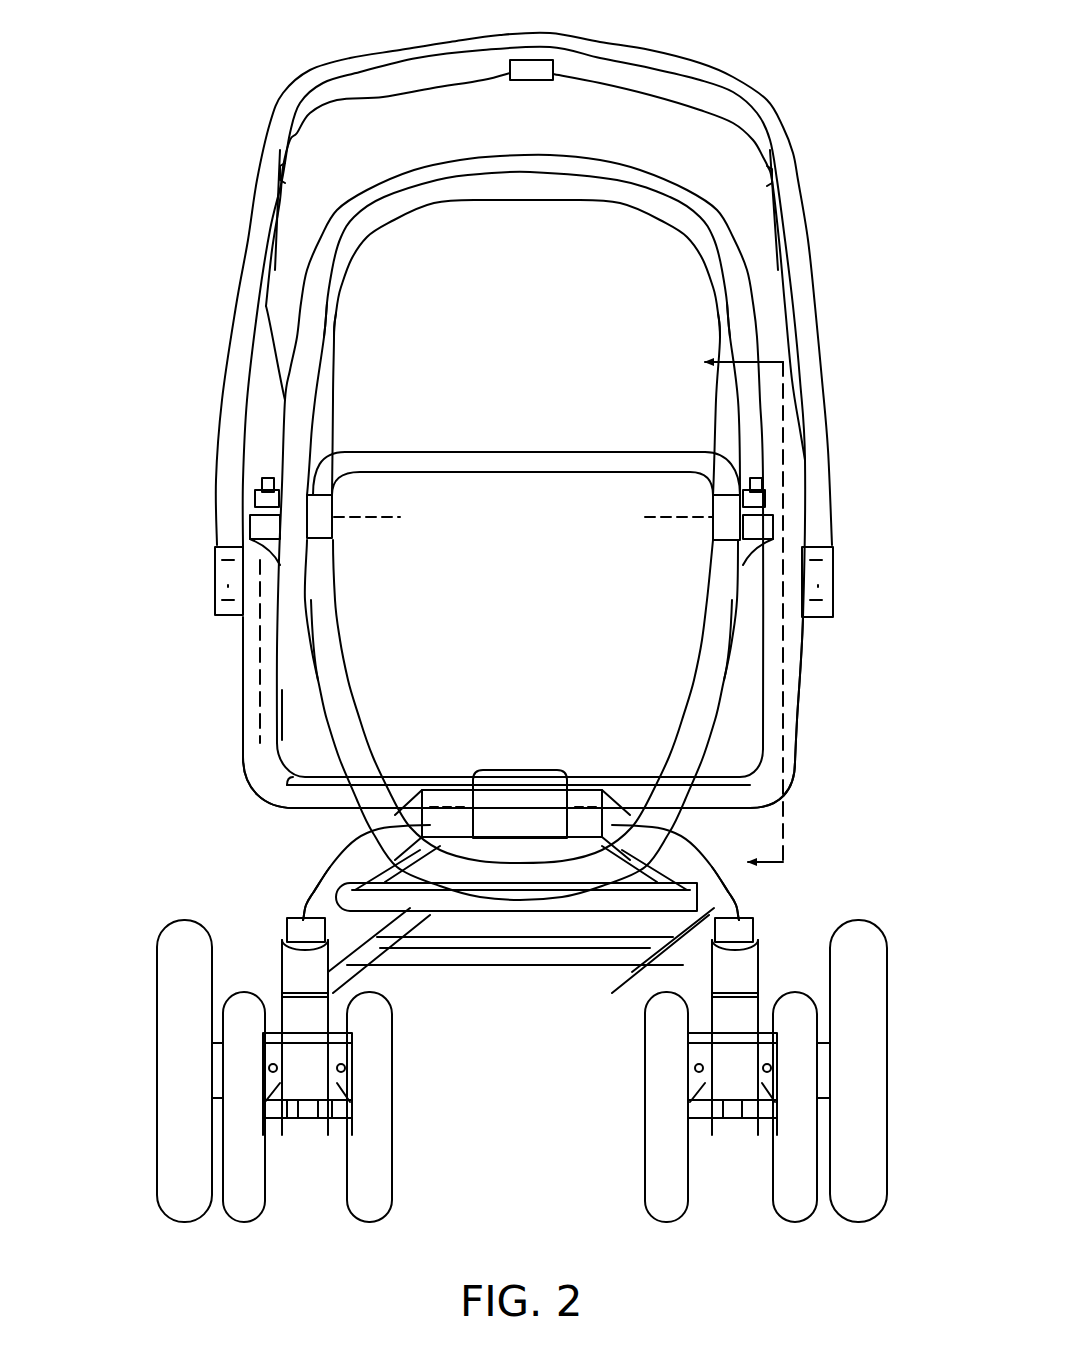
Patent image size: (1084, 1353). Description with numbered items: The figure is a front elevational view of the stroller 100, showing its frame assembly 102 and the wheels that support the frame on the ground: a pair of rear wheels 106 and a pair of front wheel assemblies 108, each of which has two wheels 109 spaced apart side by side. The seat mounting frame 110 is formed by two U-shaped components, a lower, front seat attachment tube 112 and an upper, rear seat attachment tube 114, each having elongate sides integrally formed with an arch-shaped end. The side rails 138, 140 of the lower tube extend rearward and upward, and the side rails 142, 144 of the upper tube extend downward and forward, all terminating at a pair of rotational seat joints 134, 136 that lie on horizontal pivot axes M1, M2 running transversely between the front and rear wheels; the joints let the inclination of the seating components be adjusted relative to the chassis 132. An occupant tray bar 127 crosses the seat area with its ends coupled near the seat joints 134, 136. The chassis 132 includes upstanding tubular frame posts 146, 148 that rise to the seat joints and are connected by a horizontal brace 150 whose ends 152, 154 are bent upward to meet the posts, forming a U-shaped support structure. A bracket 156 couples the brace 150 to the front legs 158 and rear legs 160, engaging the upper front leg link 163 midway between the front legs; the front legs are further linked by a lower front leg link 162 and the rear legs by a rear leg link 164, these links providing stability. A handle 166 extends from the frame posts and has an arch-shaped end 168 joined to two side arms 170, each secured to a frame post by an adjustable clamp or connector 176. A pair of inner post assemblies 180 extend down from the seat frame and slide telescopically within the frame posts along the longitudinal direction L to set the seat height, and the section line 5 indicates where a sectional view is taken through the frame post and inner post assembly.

The stroller 100 is at (143, 180).
The frame assembly 102 is at (258, 795).
The rear wheels 106 is at (183, 1222).
The front wheel assemblies 108 is at (300, 1180).
The wheels 109 is at (240, 1222).
The seat mounting frame 110 is at (350, 690).
The lower, front seat attachment tube 112 is at (677, 697).
The upper, rear seat attachment tube 114 is at (522, 200).
The occupant tray bar 127 is at (494, 452).
The chassis 132 is at (340, 850).
The seat joint 134 is at (332, 527).
The seat joint 136 is at (713, 527).
The side rail 138 is at (335, 630).
The side rail 140 is at (697, 657).
The side rail 142 is at (317, 377).
The side rail 144 is at (735, 398).
The frame post 146 is at (243, 728).
The frame post 148 is at (797, 690).
The brace 150 is at (573, 783).
The end 152 is at (245, 775).
The end 154 is at (790, 770).
The bracket 156 is at (513, 770).
The front legs 158 is at (313, 877).
The rear legs 160 is at (345, 975).
The front leg link 162 is at (500, 912).
The front leg link 163 is at (445, 790).
The rear leg link 164 is at (572, 967).
The handle 166 is at (668, 50).
The arch-shaped end 168 is at (405, 52).
The side arms 170 is at (250, 200).
The connector 176 is at (243, 620).
The inner post assemblies 180 is at (252, 525).
The section line 5 is at (728, 616).
The longitudinal direction L is at (262, 733).
The pivot axis M1 is at (389, 518).
The pivot axis M2 is at (657, 518).